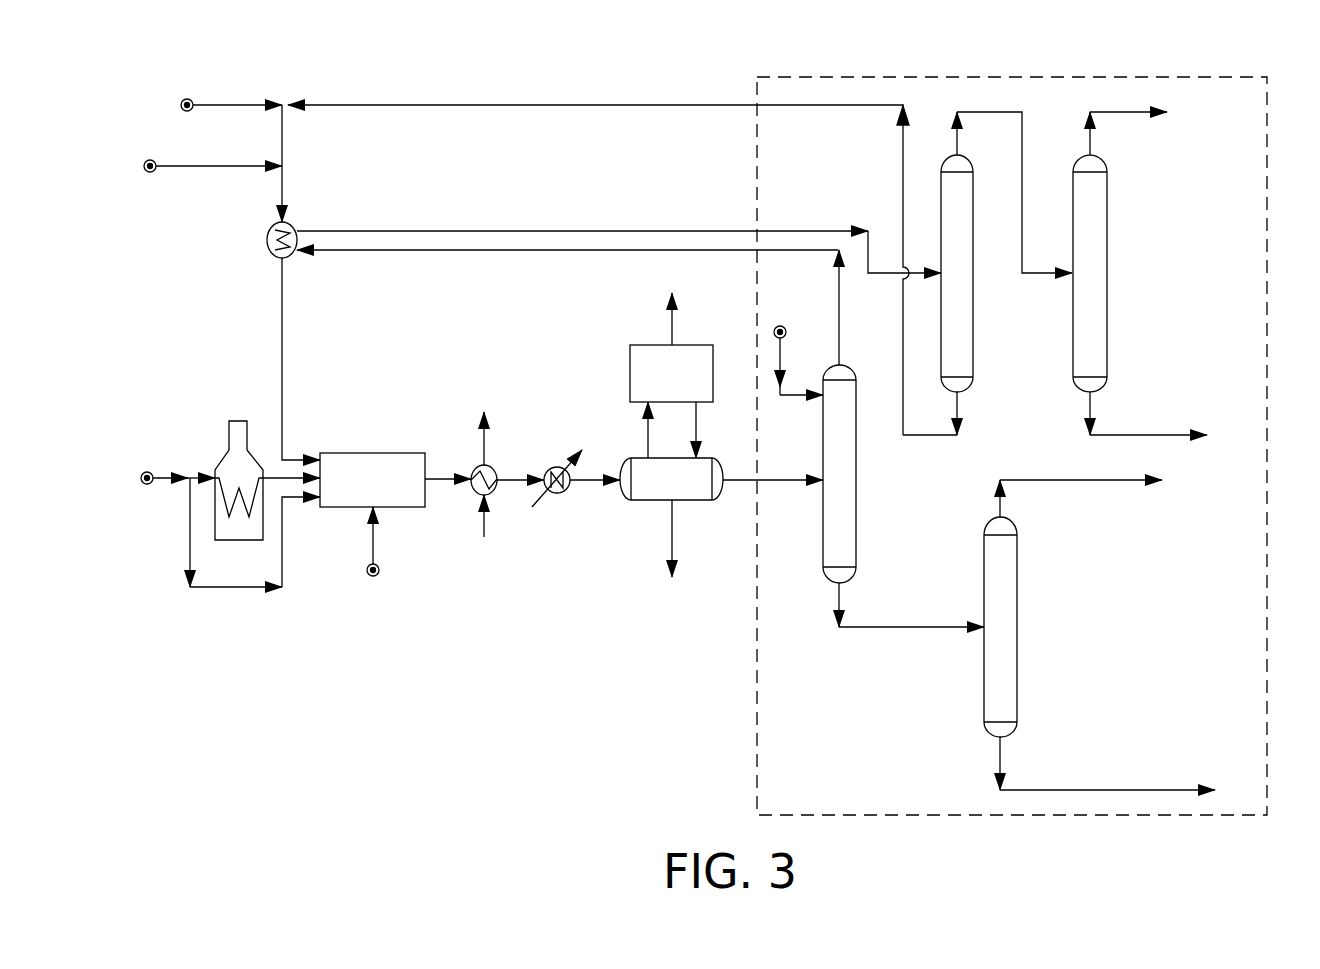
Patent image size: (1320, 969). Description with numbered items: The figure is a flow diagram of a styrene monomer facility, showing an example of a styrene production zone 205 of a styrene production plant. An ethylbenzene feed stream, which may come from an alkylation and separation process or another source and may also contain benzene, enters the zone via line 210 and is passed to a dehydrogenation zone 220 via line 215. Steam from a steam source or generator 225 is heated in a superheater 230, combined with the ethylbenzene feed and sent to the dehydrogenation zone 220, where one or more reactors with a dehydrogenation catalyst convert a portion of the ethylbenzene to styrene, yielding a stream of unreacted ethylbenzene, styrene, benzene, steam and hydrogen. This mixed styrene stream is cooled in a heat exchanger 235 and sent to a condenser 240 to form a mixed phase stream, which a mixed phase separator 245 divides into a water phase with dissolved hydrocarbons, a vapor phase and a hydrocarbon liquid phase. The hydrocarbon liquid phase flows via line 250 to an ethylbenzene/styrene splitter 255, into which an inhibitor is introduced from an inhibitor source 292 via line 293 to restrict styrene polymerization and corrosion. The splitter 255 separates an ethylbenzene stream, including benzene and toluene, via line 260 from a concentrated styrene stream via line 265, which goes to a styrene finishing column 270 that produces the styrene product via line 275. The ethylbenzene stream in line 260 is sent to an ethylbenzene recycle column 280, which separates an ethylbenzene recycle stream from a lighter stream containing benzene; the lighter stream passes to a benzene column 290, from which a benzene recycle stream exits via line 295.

The styrene production zone 205 is at (357, 100).
The line 210 is at (228, 100).
The line 215 is at (284, 301).
The dehydrogenation zone 220 is at (373, 450).
The steam source 225 is at (162, 475).
The superheater 230 is at (239, 420).
The heat exchanger 235 is at (491, 463).
The condenser 240 is at (556, 497).
The mixed phase separator 245 is at (632, 503).
The line 250 is at (729, 485).
The ethylbenzene/styrene splitter 255 is at (1230, 74).
The line 260 is at (840, 338).
The line 265 is at (887, 630).
The styrene finishing column 270 is at (1018, 638).
The line 275 is at (1093, 485).
The ethylbenzene recycle column 280 is at (974, 310).
The benzene column 290 is at (1108, 273).
The inhibitor source 292 is at (787, 330).
The line 293 is at (788, 398).
The line 295 is at (1107, 110).